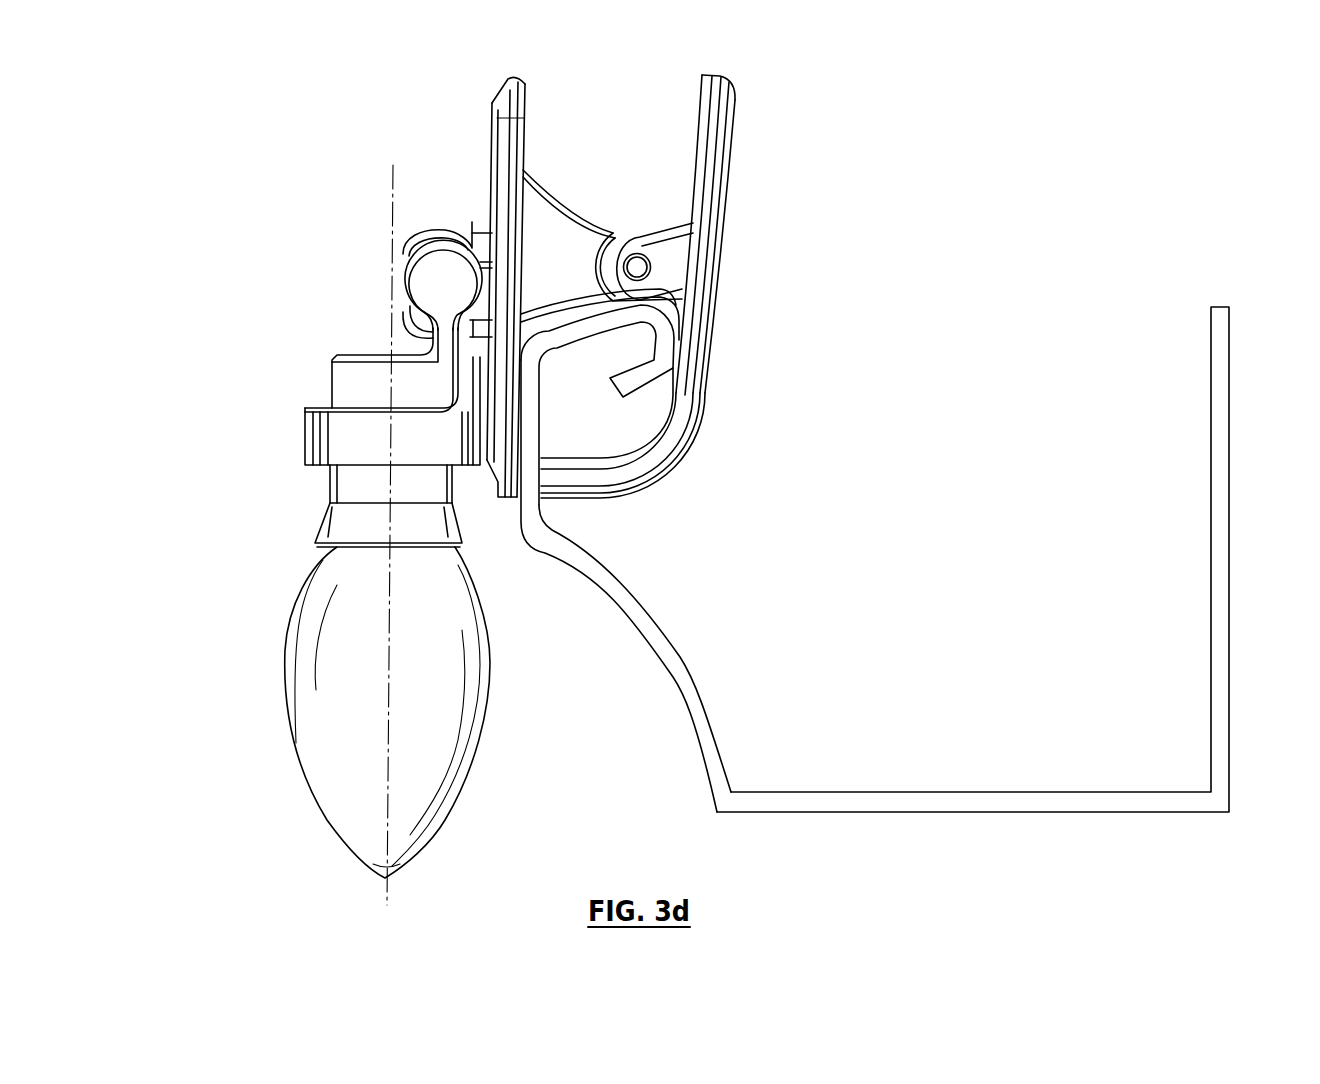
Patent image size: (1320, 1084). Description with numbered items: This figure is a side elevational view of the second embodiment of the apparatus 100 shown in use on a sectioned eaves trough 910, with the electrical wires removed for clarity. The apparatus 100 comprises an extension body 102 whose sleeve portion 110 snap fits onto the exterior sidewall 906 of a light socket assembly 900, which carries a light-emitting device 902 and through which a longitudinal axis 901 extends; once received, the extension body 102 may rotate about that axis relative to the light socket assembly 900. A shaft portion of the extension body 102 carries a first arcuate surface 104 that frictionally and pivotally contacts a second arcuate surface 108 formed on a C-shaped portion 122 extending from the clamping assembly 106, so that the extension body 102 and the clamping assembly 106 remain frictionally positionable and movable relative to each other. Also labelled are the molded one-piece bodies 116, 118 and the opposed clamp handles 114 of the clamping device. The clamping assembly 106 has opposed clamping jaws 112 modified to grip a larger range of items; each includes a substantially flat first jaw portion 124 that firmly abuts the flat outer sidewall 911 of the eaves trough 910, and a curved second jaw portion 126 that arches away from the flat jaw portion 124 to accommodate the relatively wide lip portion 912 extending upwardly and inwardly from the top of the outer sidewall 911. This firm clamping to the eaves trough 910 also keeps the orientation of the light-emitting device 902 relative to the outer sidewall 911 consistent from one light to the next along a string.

The apparatus 100 is at (246, 236).
The extension body 102 is at (334, 431).
The first arcuate surface 104 is at (440, 283).
The clamping assembly 106 is at (556, 223).
The second arcuate surface 108 is at (437, 228).
The sleeve portion 110 is at (350, 444).
The opposed clamping jaws 112 is at (672, 550).
The opposed clamp handles 114 is at (611, 319).
The molded one-piece body 116 is at (424, 310).
The molded one-piece body 118 is at (608, 230).
The C-shaped portion 122 is at (468, 240).
The first jaw portion 124 is at (506, 487).
The second jaw portion 126 is at (580, 489).
The light socket assembly 900 is at (420, 682).
The longitudinal axis 901 is at (385, 880).
The light-emitting device 902 is at (467, 703).
The exterior sidewall 906 is at (394, 496).
The eaves trough 910 is at (1214, 357).
The outer sidewall 911 is at (532, 427).
The lip portion 912 is at (590, 328).